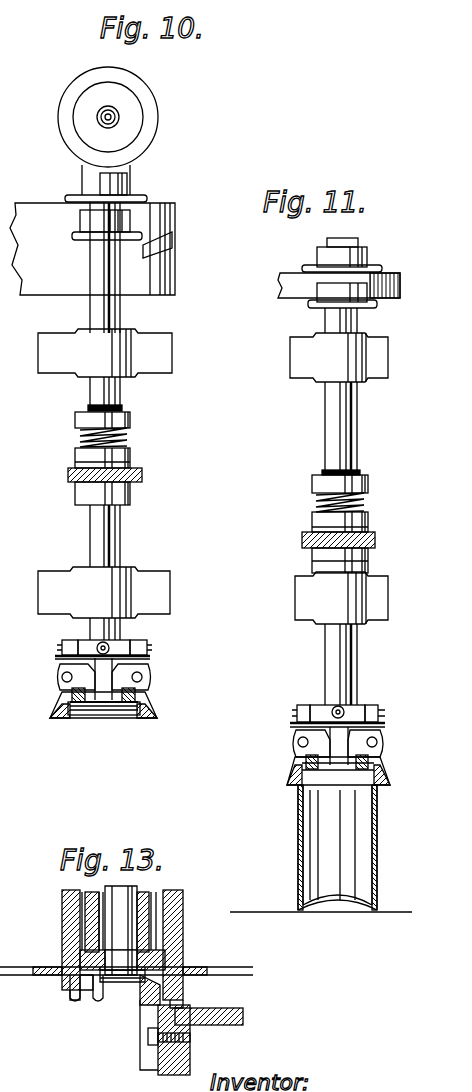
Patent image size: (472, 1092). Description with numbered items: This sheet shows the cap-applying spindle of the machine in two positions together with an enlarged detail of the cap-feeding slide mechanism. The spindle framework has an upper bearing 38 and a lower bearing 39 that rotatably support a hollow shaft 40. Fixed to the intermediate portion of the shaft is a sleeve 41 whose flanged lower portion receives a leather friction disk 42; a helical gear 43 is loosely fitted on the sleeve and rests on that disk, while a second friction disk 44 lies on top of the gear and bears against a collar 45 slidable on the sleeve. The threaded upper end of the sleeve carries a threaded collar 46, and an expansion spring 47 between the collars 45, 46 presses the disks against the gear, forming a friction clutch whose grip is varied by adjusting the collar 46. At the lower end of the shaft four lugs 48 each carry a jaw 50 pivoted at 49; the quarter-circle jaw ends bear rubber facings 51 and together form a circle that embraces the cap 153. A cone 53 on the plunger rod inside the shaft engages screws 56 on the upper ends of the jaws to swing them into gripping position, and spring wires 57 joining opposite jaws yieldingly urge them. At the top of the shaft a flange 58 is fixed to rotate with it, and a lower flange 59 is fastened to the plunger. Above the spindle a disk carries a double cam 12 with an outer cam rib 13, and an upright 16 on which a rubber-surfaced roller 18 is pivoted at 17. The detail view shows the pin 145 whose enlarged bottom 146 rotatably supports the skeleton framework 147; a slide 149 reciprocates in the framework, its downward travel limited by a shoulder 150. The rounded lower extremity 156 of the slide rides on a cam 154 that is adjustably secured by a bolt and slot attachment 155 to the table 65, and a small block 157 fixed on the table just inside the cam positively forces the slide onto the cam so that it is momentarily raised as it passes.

In FIG. 10, the double cam 12 is at (173, 200).
In FIG. 10, the cam rib 13 is at (160, 250).
In FIG. 10, the upright 16 is at (130, 170).
In FIG. 10, the pivot 17 is at (104, 120).
In FIG. 10, the roller 18 is at (153, 117).
In FIG. 10, the upper bearing 38 is at (105, 353).
In FIG. 11, the upper bearing 38 is at (339, 357).
In FIG. 10, the lower bearing 39 is at (104, 592).
In FIG. 11, the lower bearing 39 is at (341, 598).
In FIG. 10, the hollow shaft 40 is at (121, 546).
In FIG. 11, the hollow shaft 40 is at (358, 419).
In FIG. 10, the sleeve 41 is at (122, 408).
In FIG. 11, the sleeve 41 is at (316, 564).
In FIG. 10, the friction disk 42 is at (130, 492).
In FIG. 11, the friction disk 42 is at (368, 552).
In FIG. 10, the helical gear 43 is at (70, 481).
In FIG. 11, the helical gear 43 is at (303, 543).
In FIG. 10, the friction disk 44 is at (130, 471).
In FIG. 11, the friction disk 44 is at (366, 533).
In FIG. 10, the collar 45 is at (86, 454).
In FIG. 11, the collar 45 is at (312, 520).
In FIG. 10, the threaded collar 46 is at (130, 420).
In FIG. 11, the threaded collar 46 is at (312, 487).
In FIG. 10, the expansion spring 47 is at (127, 440).
In FIG. 11, the expansion spring 47 is at (364, 502).
In FIG. 10, the lug 48 is at (84, 714).
In FIG. 10, the pivot 49 is at (62, 677).
In FIG. 11, the pivot 49 is at (378, 736).
In FIG. 10, the jaw 50 is at (150, 678).
In FIG. 11, the jaw 50 is at (346, 722).
In FIG. 10, the facing 51 is at (62, 718).
In FIG. 11, the facing 51 is at (286, 775).
In FIG. 10, the cone 53 is at (112, 646).
In FIG. 11, the cone 53 is at (318, 711).
In FIG. 10, the screw 56 is at (63, 645).
In FIG. 11, the screw 56 is at (350, 710).
In FIG. 10, the spring 57 is at (63, 657).
In FIG. 11, the spring 57 is at (300, 723).
In FIG. 10, the flange 58 is at (68, 198).
In FIG. 11, the flange 58 is at (309, 267).
In FIG. 10, the flange 59 is at (76, 241).
In FIG. 11, the flange 59 is at (372, 307).
In FIG. 13, the table 65 is at (228, 1026).
In FIG. 13, the pin 145 is at (125, 908).
In FIG. 13, the enlarged bottom of pin 146 is at (95, 962).
In FIG. 13, the skeleton framework 147 is at (150, 923).
In FIG. 13, the slide 149 is at (178, 895).
In FIG. 13, the shoulder 150 is at (185, 960).
In FIG. 10, the cap 153 is at (118, 706).
In FIG. 13, the cam 154 is at (142, 992).
In FIG. 13, the bolt and slot attachment 155 is at (148, 1037).
In FIG. 13, the rounded lower extremity 156 is at (77, 1003).
In FIG. 13, the block 157 is at (192, 1006).